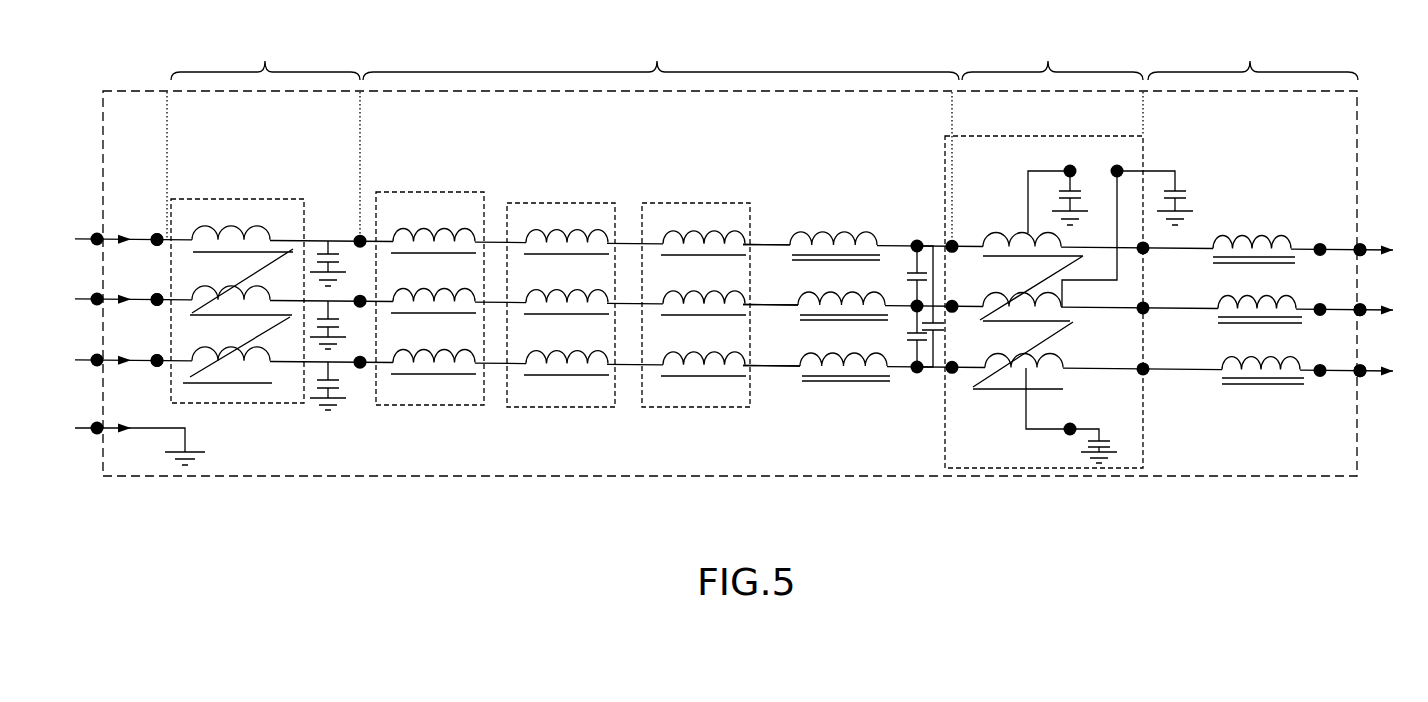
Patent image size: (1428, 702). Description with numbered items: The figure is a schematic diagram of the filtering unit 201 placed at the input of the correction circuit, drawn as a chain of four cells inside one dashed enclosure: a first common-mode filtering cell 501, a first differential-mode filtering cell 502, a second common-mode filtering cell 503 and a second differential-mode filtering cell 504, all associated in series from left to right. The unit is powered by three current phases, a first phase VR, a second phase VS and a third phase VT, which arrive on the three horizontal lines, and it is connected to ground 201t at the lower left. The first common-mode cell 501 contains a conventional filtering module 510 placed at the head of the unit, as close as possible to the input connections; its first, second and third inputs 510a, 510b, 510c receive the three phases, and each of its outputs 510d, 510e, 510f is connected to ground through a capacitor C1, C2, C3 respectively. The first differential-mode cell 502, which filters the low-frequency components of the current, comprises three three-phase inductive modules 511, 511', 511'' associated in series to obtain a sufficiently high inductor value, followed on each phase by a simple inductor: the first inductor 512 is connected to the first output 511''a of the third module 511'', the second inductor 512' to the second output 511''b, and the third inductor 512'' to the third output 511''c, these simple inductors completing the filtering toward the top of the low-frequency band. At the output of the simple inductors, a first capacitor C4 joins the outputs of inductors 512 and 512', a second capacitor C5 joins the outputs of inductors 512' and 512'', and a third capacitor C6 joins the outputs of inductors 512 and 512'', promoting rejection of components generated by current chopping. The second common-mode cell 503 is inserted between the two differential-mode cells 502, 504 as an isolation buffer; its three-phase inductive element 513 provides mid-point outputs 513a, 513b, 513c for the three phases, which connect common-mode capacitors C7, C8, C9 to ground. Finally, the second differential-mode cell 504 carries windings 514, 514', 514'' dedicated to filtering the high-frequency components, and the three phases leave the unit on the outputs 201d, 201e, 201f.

The filtering unit 201 is at (118, 91).
The first common-mode filtering cell 501 is at (265, 53).
The first differential-mode filtering cell 502 is at (661, 53).
The second common-mode filtering cell 503 is at (1052, 53).
The second differential-mode filtering cell 504 is at (1253, 53).
The filtering module 510 is at (253, 198).
The first input of the filtering module 510a is at (157, 236).
The second input of the filtering module 510b is at (157, 296).
The third input of the filtering module 510c is at (157, 357).
The first output of the filtering module 510d is at (295, 239).
The second output of the filtering module 510e is at (287, 297).
The third output of the filtering module 510f is at (285, 358).
The three-phase inductive module 511 is at (428, 278).
The three-phase inductive module 511' is at (551, 283).
The third three-phase inductive module 511'' is at (692, 281).
The first output of the third inductive module 511''a is at (783, 212).
The second output of the third inductive module 511''b is at (783, 285).
The third output of the third inductive module 511''c is at (782, 344).
The first simple inductor 512 is at (851, 227).
The second simple inductor 512' is at (848, 292).
The third simple inductor 512'' is at (852, 350).
The inductive module of the second common-mode filtering cell 513 is at (1032, 136).
The mid-point output 513a is at (1070, 165).
The mid-point output 513b is at (1120, 167).
The mid-point output 513c is at (1068, 432).
The winding 514 is at (1254, 223).
The winding 514' is at (1255, 295).
The winding 514'' is at (1257, 356).
The first output of the filtering unit 201d is at (1357, 248).
The second output of the filtering unit 201e is at (1357, 309).
The third output of the filtering unit 201f is at (1357, 369).
The ground 201t is at (167, 461).
The capacitor C1 is at (340, 263).
The capacitor C2 is at (340, 325).
The capacitor C3 is at (340, 386).
The first capacitor C4 is at (907, 276).
The second capacitor C5 is at (907, 336).
The third capacitor C6 is at (945, 306).
The common-mode capacitor C7 is at (1061, 198).
The common-mode capacitor C8 is at (1166, 198).
The common-mode capacitor C9 is at (1104, 441).
The first phase VR is at (68, 244).
The second phase VS is at (67, 304).
The third phase VT is at (67, 365).